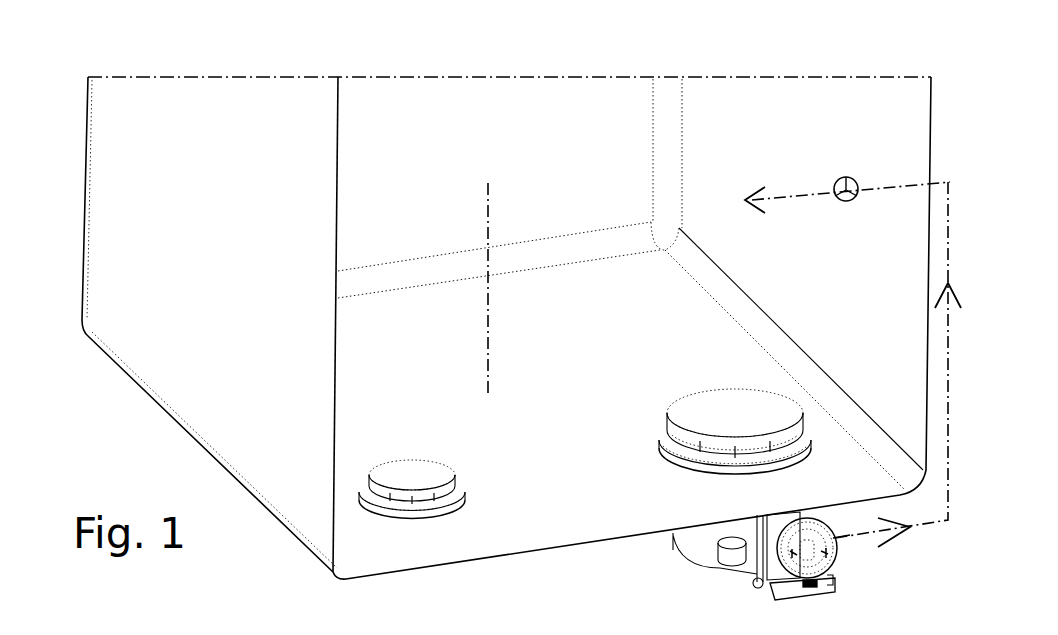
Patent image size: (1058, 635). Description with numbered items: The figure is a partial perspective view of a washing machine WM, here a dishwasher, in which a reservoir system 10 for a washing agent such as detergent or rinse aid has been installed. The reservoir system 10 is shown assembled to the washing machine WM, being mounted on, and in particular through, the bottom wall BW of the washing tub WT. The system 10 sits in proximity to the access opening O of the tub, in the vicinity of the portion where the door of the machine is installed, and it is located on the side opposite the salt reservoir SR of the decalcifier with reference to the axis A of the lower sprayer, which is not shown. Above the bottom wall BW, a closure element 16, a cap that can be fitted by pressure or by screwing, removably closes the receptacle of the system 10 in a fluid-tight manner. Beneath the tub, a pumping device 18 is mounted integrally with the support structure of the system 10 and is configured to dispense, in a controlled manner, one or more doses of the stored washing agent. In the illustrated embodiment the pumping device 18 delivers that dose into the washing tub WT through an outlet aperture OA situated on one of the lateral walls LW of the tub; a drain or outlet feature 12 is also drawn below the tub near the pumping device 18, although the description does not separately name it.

The washing machine WM is at (70, 133).
The washing tub WT is at (150, 229).
The lateral wall LW is at (717, 103).
The axis A is at (487, 220).
The access opening O is at (933, 110).
The outlet aperture OA is at (846, 201).
The reservoir system 10 is at (776, 394).
The closure element 16 is at (710, 411).
The salt reservoir SR is at (420, 458).
The bottom wall BW is at (543, 473).
The drain outlet 12 is at (695, 541).
The pumping device 18 is at (833, 562).